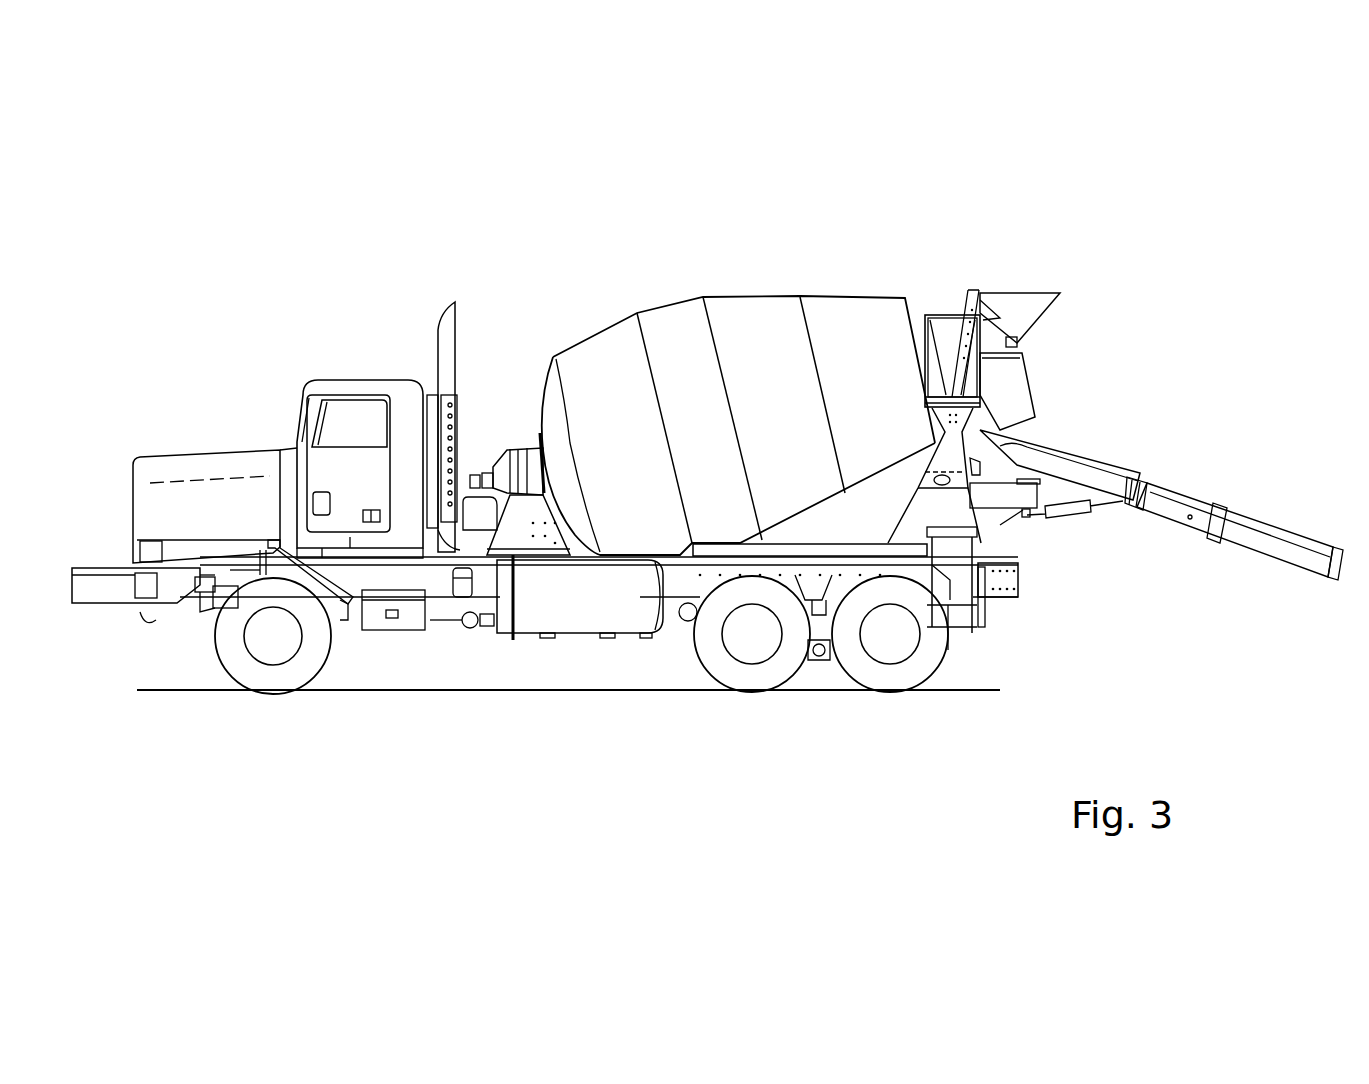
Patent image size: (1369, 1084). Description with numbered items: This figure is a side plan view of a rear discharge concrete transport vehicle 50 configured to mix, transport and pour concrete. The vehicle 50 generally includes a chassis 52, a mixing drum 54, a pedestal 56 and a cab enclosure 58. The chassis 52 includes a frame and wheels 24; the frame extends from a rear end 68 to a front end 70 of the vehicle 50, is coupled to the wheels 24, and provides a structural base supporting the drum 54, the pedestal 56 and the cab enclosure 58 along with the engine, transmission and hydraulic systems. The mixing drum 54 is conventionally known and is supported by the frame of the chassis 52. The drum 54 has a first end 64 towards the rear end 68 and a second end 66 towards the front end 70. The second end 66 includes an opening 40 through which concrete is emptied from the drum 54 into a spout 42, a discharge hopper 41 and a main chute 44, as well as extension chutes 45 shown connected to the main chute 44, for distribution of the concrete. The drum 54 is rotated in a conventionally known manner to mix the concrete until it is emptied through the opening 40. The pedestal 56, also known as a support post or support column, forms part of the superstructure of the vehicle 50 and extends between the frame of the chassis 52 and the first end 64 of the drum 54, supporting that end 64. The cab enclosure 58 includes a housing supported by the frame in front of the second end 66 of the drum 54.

The rear discharge concrete transport vehicle 50 is at (610, 211).
The mixing drum 54 is at (770, 334).
The cab enclosure 58 is at (368, 376).
The second end 66 is at (533, 370).
The first end 64 is at (944, 292).
The opening 40 is at (1161, 430).
The spout 42 is at (1040, 313).
The discharge hopper 41 is at (1005, 373).
The main chute 44 is at (1055, 460).
The extension chutes 45 is at (1273, 547).
The pedestal 56 is at (947, 503).
The rear end 68 is at (1036, 591).
The wheels 24 is at (305, 665).
The chassis 52 is at (230, 578).
The front end 70 is at (105, 627).